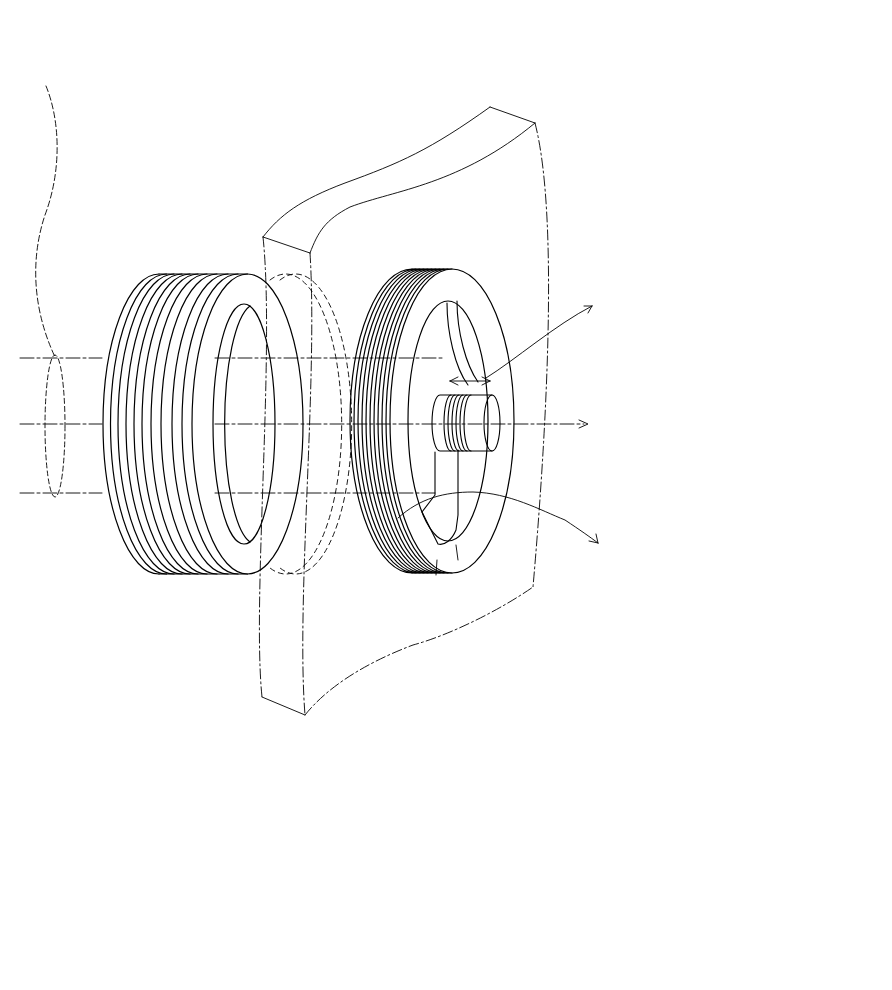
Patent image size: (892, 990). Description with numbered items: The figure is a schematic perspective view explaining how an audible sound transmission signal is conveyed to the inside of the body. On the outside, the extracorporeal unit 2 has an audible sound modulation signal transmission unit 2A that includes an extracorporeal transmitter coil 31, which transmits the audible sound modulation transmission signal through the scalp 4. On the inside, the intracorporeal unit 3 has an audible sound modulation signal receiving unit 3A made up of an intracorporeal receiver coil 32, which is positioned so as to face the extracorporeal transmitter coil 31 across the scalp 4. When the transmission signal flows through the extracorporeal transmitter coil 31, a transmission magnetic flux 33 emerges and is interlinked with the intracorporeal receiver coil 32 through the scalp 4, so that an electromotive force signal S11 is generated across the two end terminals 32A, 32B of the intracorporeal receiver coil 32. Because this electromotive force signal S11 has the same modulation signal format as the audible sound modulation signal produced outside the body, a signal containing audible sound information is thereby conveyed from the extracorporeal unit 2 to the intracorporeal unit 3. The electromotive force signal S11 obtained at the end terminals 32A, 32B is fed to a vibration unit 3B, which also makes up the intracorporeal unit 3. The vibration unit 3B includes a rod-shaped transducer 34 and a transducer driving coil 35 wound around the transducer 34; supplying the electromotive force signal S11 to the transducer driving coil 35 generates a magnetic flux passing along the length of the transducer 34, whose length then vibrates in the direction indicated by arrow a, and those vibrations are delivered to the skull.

The extracorporeal unit 2 is at (114, 133).
The audible sound modulation signal transmission unit 2A is at (181, 257).
The intracorporeal unit 3 is at (560, 282).
The audible sound modulation signal receiving unit 3A is at (550, 118).
The vibration unit 3B is at (603, 334).
The scalp 4 is at (442, 160).
The extracorporeal transmitter coil 31 is at (200, 576).
The intracorporeal receiver coil 32 is at (427, 268).
The end terminal 32A is at (458, 560).
The end terminal 32B is at (436, 575).
The transmission magnetic flux 33 is at (46, 86).
The transducer 34 is at (490, 419).
The transducer driving coil 35 is at (476, 392).
The arrow a is at (478, 372).
The electromotive force signal S11 is at (462, 474).